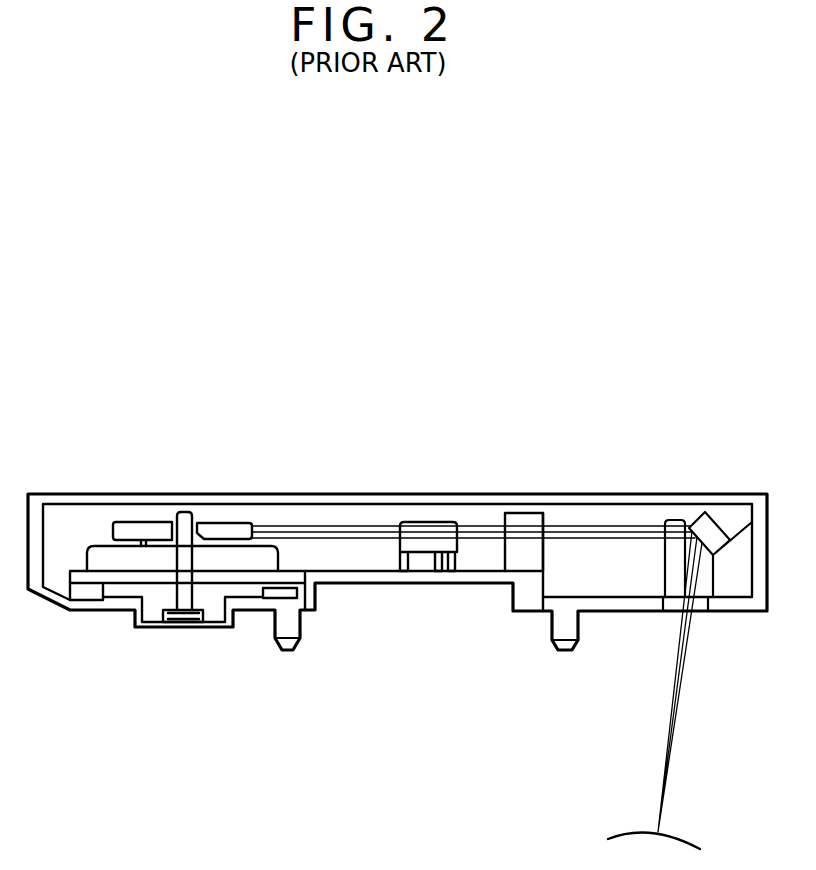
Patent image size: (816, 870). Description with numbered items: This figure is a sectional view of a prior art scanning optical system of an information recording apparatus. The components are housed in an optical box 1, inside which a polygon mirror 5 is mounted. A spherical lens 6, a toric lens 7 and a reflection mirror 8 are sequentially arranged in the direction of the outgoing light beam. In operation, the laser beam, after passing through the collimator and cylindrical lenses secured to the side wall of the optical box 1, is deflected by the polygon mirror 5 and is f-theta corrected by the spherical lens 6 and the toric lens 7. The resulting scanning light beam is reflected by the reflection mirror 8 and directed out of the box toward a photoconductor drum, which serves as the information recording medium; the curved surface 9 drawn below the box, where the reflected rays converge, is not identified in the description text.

The optical box 1 is at (348, 583).
The polygon mirror 5 is at (218, 522).
The spherical lens 6 is at (427, 543).
The toric lens 7 is at (513, 553).
The reflection mirror 8 is at (708, 527).
The original document surface 9 is at (690, 843).